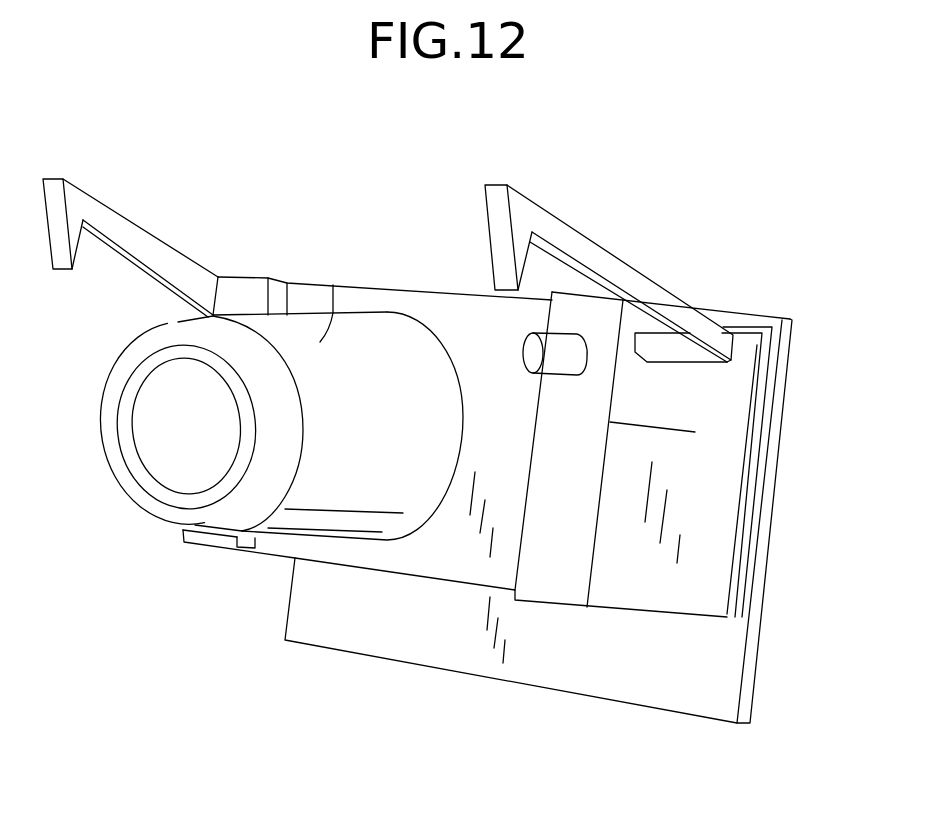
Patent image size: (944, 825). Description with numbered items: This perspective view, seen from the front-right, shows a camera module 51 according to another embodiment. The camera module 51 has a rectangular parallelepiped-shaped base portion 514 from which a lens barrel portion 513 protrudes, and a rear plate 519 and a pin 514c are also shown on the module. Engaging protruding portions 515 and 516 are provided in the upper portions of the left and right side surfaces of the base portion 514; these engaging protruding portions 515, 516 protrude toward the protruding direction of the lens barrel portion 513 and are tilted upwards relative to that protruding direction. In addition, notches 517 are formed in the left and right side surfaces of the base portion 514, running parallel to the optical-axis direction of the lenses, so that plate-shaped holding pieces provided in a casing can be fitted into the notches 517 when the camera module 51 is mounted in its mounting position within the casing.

The camera module 51 is at (264, 188).
The lens barrel portion 513 is at (322, 341).
The base portion 514 is at (389, 288).
The pin 514c is at (560, 345).
The engaging protruding portion 515 is at (80, 199).
The engaging protruding portion 516 is at (527, 215).
The notches 517 is at (657, 424).
The rear plate 519 is at (763, 610).